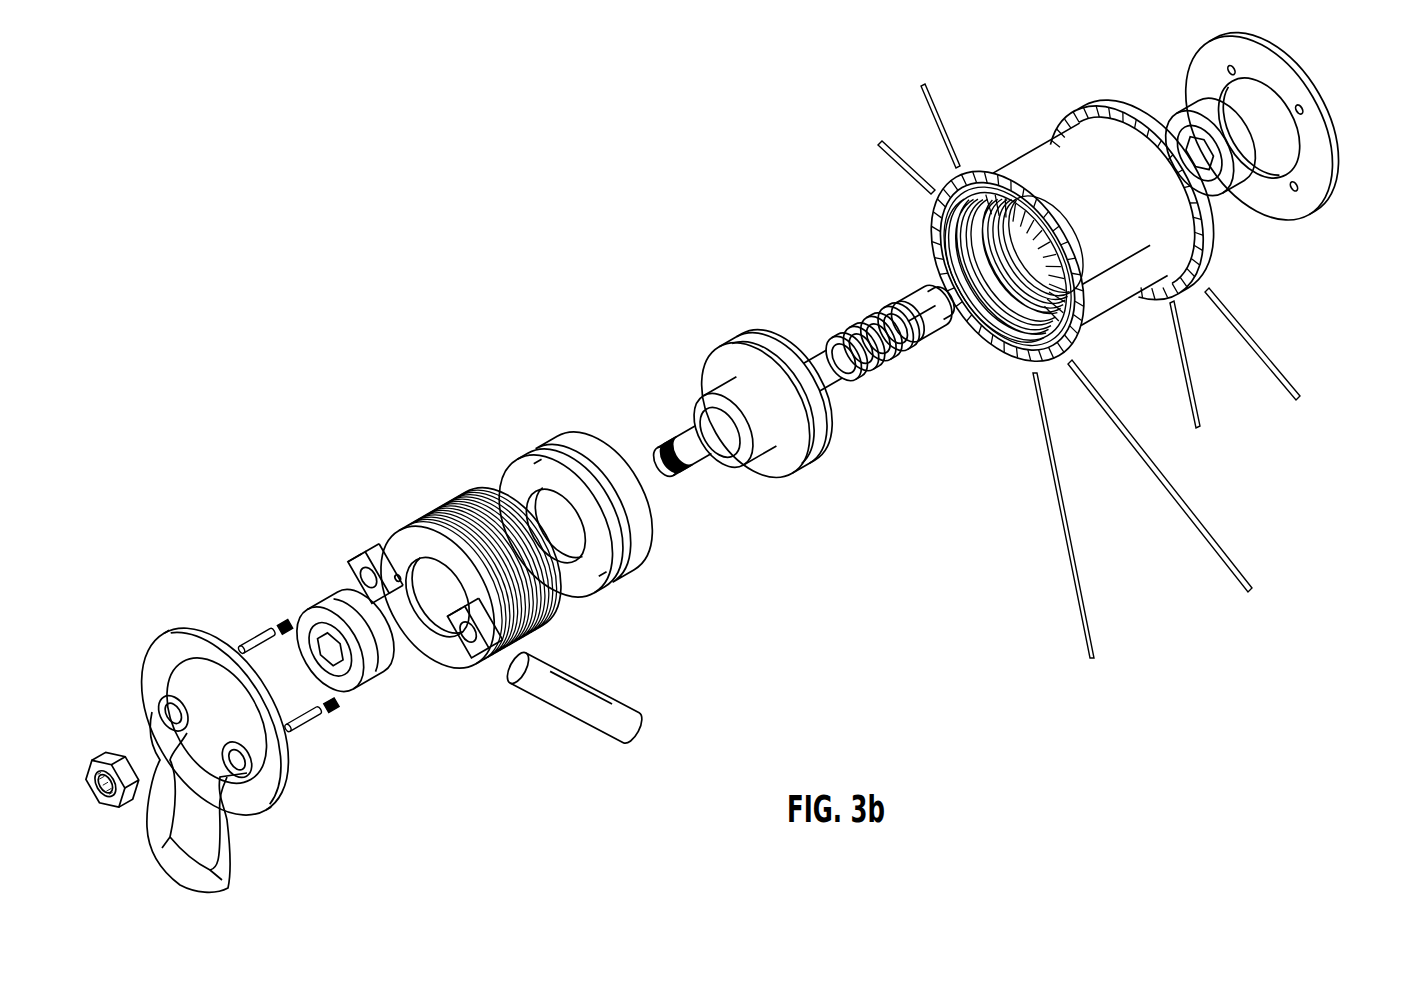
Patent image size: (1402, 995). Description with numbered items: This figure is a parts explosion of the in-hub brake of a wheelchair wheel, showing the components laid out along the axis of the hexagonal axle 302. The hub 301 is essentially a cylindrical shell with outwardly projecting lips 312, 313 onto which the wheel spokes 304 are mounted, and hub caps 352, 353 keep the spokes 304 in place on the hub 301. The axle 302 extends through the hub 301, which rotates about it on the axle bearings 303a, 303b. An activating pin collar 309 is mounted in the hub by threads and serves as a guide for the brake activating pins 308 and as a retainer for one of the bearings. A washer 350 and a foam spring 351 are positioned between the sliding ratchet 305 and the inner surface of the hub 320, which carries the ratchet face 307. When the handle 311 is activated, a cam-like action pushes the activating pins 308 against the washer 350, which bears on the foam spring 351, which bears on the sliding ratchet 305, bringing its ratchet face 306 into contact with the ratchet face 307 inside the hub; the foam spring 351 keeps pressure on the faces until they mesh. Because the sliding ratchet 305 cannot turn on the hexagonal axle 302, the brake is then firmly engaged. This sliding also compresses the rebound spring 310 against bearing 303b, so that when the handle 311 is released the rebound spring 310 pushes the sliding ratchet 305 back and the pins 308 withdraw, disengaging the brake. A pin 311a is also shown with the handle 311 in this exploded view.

The hub 301 is at (1035, 138).
The hexagonal axle 302 is at (835, 400).
The axle bearing 303a is at (378, 688).
The axle bearing 303b is at (1240, 178).
The wheel spokes 304 is at (942, 122).
The sliding ratchet 305 is at (715, 365).
The ratchet face 306 is at (780, 342).
The ratchet face 307 is at (1000, 345).
The brake activating pins 308 is at (262, 630).
The activating pin collar 309 is at (398, 528).
The rebound spring 310 is at (848, 338).
The handle 311 is at (230, 845).
The key pin 311a is at (595, 678).
The outwardly projecting lip 312 is at (1103, 98).
The outwardly projecting lip 313 is at (965, 190).
The inner surface of the hub 320 is at (963, 345).
The washer 350 is at (513, 465).
The foam spring 351 is at (555, 440).
The hub cap 352 is at (270, 770).
The hub cap 353 is at (1320, 165).